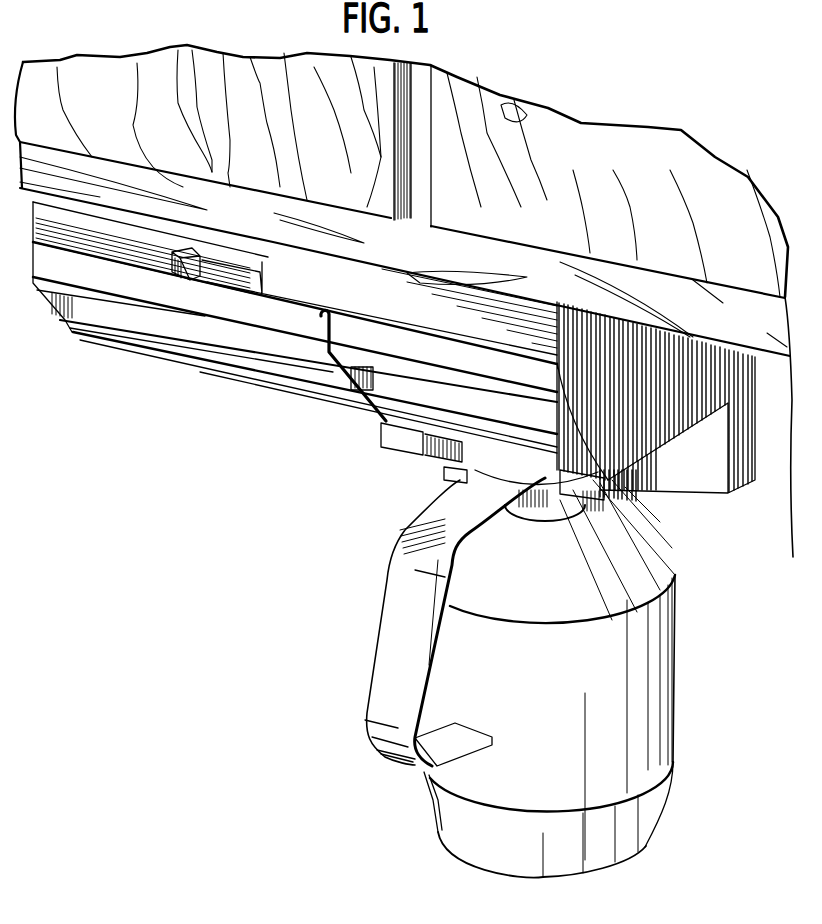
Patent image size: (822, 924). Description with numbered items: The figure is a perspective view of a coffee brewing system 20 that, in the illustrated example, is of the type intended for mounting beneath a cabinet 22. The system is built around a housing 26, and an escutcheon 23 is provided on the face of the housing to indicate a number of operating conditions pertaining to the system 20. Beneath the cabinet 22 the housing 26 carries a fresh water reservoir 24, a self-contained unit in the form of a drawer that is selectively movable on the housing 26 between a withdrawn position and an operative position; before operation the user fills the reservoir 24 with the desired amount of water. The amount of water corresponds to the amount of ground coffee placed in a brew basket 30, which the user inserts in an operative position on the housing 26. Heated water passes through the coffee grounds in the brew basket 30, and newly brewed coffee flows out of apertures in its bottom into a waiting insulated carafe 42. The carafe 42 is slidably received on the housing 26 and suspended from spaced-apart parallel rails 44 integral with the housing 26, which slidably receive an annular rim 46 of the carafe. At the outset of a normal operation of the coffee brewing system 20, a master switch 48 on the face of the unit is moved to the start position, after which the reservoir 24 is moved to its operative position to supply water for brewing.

The coffee brewing system 20 is at (283, 504).
The cabinet 22 is at (760, 329).
The escutcheon 23 is at (474, 320).
The fresh water reservoir 24 is at (212, 364).
The housing 26 is at (743, 413).
The brew basket 30 is at (383, 414).
The insulated carafe 42 is at (641, 742).
The rails 44 is at (445, 475).
The annular rim 46 is at (535, 517).
The master switch 48 is at (180, 280).